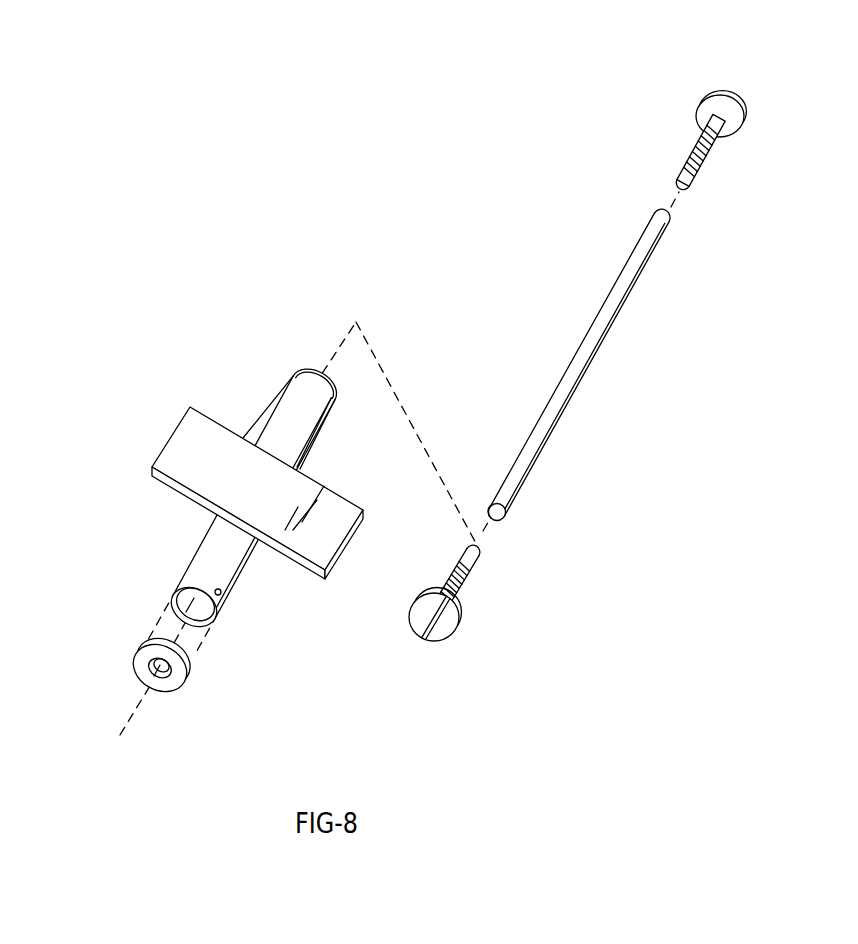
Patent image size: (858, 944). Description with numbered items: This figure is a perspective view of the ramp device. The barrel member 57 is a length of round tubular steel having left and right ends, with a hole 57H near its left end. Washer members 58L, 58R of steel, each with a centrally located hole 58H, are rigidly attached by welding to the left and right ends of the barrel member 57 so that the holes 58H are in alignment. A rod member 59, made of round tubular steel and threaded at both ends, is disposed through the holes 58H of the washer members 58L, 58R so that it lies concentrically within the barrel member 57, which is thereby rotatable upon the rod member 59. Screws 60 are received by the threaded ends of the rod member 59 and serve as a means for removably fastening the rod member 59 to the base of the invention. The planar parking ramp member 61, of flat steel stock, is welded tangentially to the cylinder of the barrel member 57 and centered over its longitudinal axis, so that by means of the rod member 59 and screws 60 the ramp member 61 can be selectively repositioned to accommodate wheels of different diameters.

The barrel member 57 is at (206, 540).
The hole 57H is at (224, 594).
The washer member 58L is at (133, 663).
The washer member 58R is at (311, 374).
The hole 58H is at (168, 672).
The rod member 59 is at (598, 329).
The screw 60 is at (448, 626).
The parking ramp member 61 is at (183, 430).